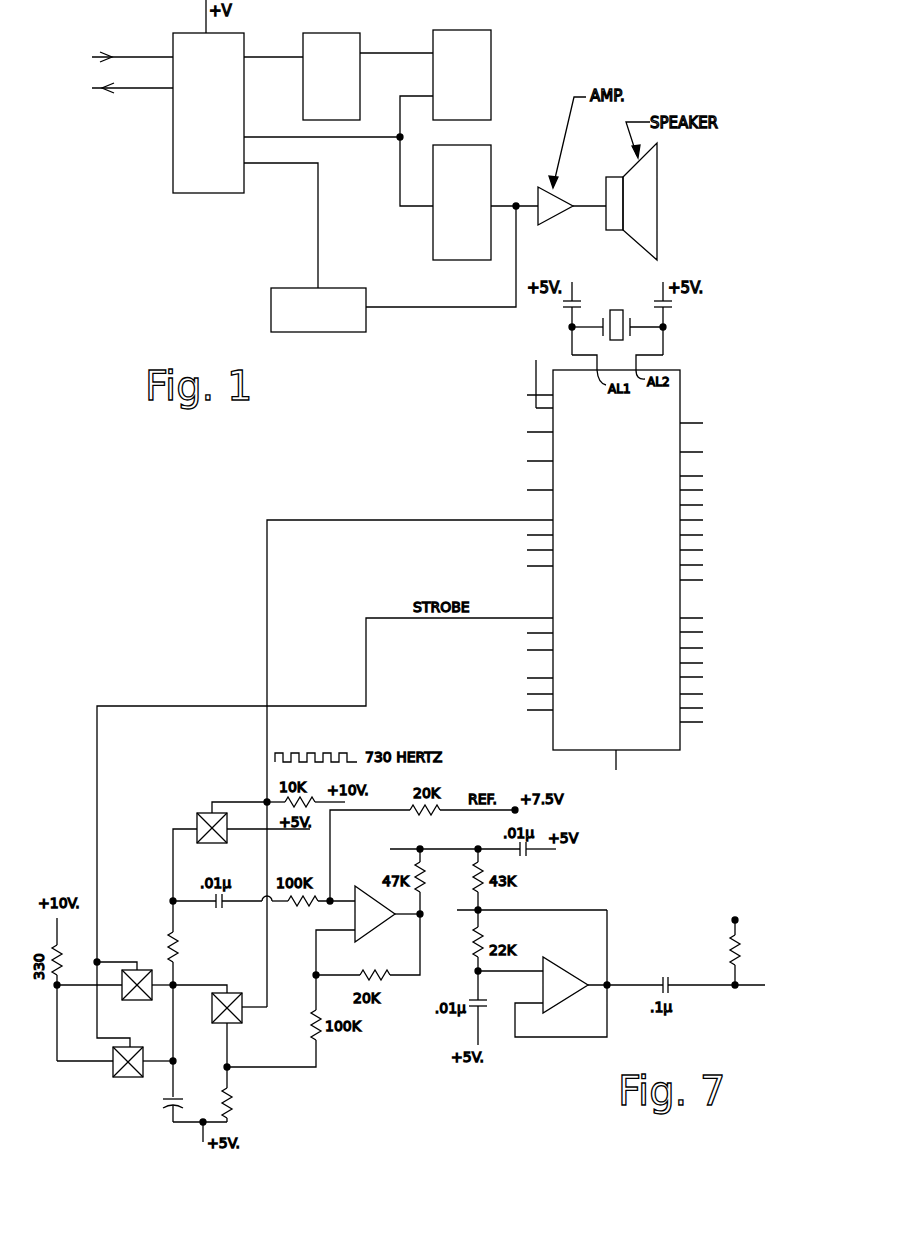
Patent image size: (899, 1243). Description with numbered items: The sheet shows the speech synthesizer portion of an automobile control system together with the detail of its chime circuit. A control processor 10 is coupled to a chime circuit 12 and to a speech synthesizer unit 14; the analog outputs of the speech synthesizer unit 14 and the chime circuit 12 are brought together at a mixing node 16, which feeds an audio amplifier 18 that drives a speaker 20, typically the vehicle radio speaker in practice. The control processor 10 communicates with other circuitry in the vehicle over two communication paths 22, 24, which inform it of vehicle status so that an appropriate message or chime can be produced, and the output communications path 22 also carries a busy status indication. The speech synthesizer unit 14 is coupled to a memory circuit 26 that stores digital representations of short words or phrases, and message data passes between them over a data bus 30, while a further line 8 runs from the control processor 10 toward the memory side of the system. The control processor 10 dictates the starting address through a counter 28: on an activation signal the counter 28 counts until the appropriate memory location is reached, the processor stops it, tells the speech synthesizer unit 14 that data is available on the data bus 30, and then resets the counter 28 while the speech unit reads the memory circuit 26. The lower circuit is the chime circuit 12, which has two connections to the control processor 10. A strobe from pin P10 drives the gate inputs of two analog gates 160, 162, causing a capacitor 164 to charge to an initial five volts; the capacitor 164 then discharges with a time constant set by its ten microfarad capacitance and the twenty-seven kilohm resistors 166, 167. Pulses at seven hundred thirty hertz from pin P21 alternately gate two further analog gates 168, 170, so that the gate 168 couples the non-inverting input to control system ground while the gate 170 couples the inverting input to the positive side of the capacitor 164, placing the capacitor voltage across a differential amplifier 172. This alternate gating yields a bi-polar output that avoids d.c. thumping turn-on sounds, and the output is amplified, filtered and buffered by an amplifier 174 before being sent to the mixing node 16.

In FIG. 1, the bus line 8 is at (362, 137).
In FIG. 1, the control processor 10 is at (232, 43).
In FIG. 7, the control processor 10 is at (664, 518).
In FIG. 1, the chime circuit 12 is at (328, 325).
In FIG. 7, the chime circuit 12 is at (210, 672).
In FIG. 1, the speech synthesizer unit 14 is at (482, 155).
In FIG. 1, the mixing node 16 is at (516, 204).
In FIG. 7, the mixing node 16 is at (737, 920).
In FIG. 1, the audio amplifier 18 is at (552, 212).
In FIG. 1, the speaker 20 is at (650, 208).
In FIG. 1, the output communications path 22 is at (126, 92).
In FIG. 1, the communication path 24 is at (124, 54).
In FIG. 1, the memory circuit 26 is at (485, 57).
In FIG. 1, the counter 28 is at (350, 38).
In FIG. 1, the data bus 30 is at (400, 177).
In FIG. 7, the analog gate 160 is at (141, 968).
In FIG. 7, the analog gate 162 is at (122, 1077).
In FIG. 7, the capacitor 164 is at (178, 1106).
In FIG. 7, the resistor 166 is at (232, 1113).
In FIG. 7, the resistor 167 is at (171, 930).
In FIG. 7, the analog gate 168 is at (200, 812).
In FIG. 7, the analog gate 170 is at (243, 1013).
In FIG. 7, the differential amplifier 172 is at (370, 920).
In FIG. 7, the amplifier 174 is at (573, 963).